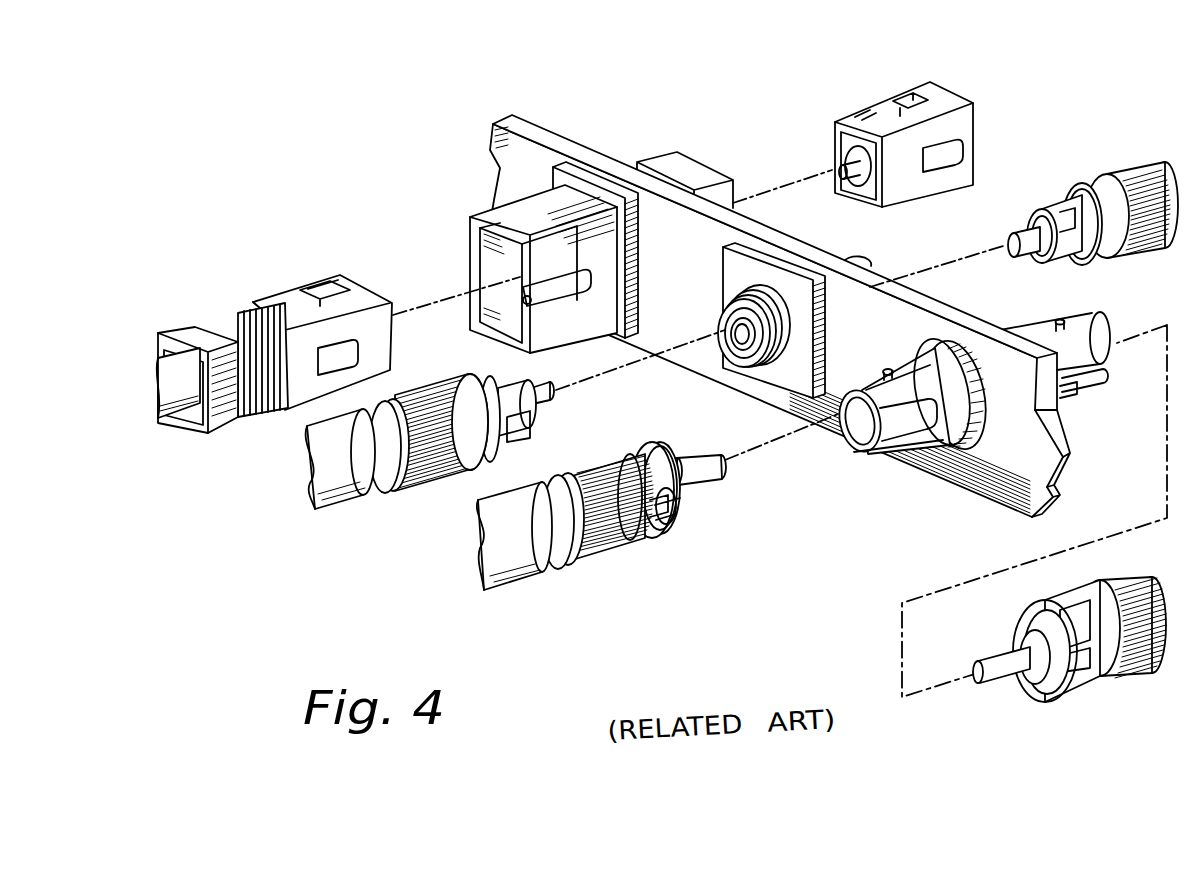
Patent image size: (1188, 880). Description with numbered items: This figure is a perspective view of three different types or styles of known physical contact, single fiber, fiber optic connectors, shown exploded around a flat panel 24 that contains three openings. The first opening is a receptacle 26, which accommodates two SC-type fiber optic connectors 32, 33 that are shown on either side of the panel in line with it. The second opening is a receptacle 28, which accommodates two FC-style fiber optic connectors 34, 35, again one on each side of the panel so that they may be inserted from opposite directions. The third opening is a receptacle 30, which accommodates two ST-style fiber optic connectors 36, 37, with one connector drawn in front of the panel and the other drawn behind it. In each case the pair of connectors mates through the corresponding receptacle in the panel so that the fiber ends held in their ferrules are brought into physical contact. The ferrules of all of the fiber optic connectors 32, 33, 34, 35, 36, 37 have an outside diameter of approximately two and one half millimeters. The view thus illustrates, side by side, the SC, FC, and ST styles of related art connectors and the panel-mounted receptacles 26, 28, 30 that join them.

The flat panel 24 is at (576, 146).
The receptacle 26 is at (510, 207).
The receptacle 28 is at (731, 281).
The receptacle 30 is at (911, 358).
The SC-type fiber optic connector 32 is at (265, 417).
The SC-type fiber optic connector 33 is at (838, 120).
The FC-style fiber optic connector 34 is at (423, 487).
The FC-style fiber optic connector 35 is at (1083, 182).
The ST-style fiber optic connector 36 is at (593, 550).
The ST-style fiber optic connector 37 is at (1012, 628).